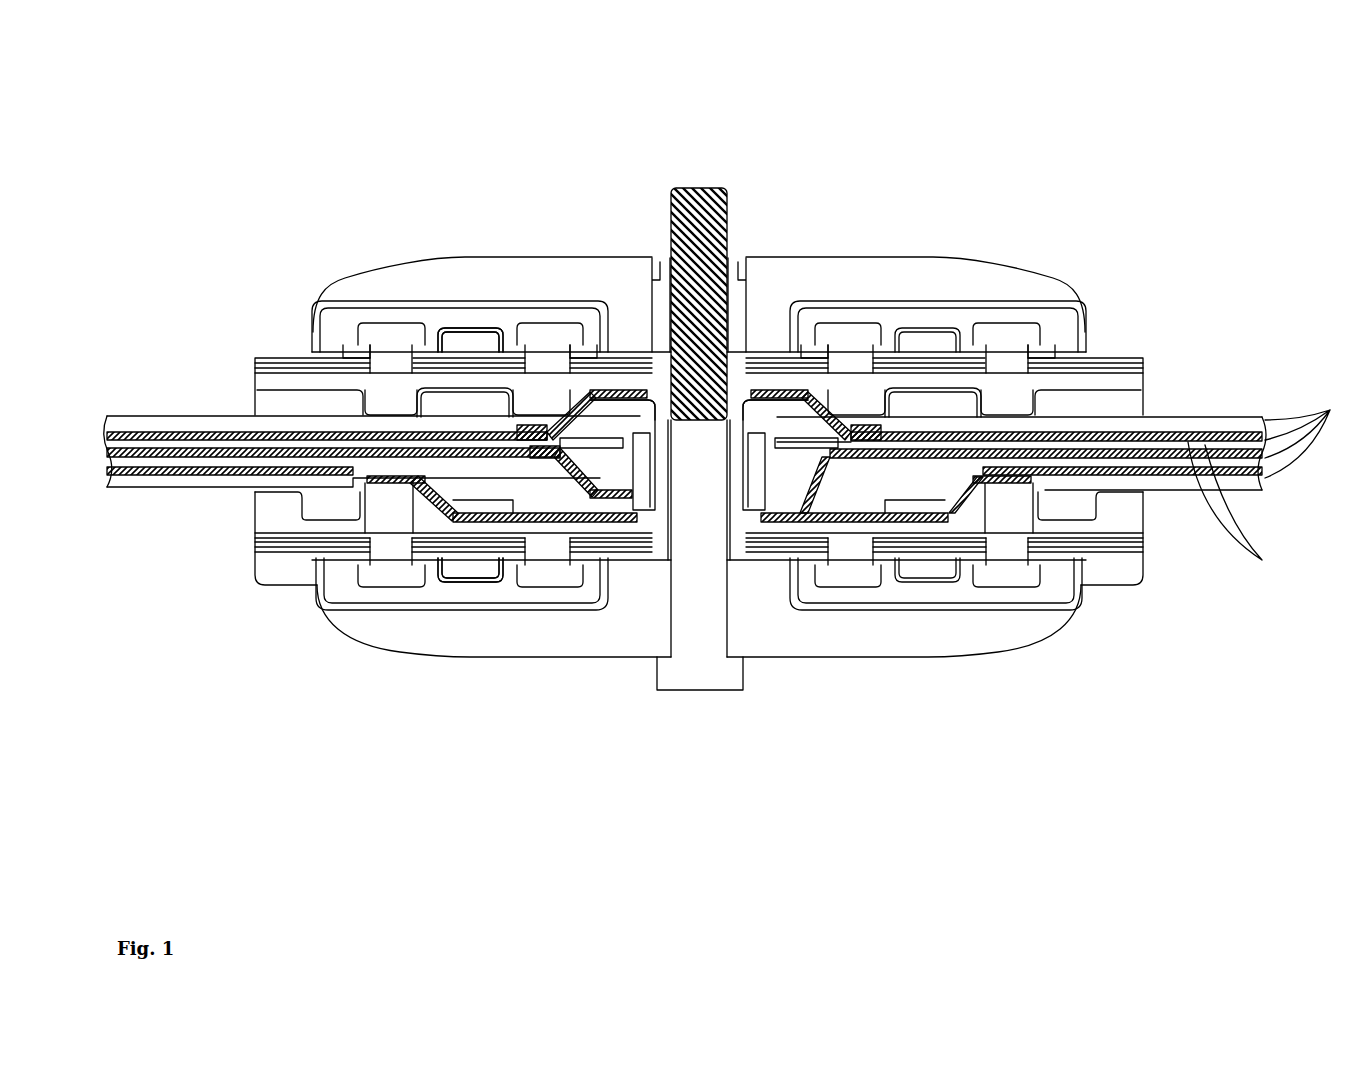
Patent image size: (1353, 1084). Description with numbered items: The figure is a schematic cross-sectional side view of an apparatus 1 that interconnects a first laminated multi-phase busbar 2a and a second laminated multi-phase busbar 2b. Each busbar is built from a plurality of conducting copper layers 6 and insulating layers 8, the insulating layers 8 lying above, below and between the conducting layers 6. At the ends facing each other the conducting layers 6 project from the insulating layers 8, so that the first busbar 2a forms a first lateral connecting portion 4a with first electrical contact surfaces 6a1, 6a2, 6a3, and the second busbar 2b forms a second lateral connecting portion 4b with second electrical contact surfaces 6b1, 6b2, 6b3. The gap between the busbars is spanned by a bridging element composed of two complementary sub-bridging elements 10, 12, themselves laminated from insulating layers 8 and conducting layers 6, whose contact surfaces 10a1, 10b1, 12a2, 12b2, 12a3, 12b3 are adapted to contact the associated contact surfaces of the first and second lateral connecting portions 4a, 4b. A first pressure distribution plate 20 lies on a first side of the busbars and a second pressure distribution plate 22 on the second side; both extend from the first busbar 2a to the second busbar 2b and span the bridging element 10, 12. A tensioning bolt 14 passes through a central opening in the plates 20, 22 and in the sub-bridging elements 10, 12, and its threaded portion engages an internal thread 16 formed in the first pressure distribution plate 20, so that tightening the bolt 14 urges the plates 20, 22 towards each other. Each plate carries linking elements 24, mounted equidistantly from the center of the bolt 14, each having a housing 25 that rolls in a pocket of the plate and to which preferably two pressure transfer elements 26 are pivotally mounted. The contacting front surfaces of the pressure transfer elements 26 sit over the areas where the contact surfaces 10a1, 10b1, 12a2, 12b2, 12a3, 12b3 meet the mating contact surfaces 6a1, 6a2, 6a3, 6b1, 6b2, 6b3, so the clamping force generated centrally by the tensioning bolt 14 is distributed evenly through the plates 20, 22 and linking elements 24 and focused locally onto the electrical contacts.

The apparatus 1 is at (1151, 626).
The first laminated multi-phase busbar 2a is at (1214, 421).
The second laminated multi-phase busbar 2b is at (136, 416).
The first lateral connecting portion 4a is at (1008, 320).
The second lateral connecting portion 4b is at (432, 322).
The conducting copper layers 6 is at (1235, 508).
The first electrical contact surface 6a1 is at (857, 430).
The first electrical contact surface 6a2 is at (880, 522).
The first electrical contact surface 6a3 is at (1000, 490).
The second electrical contact surface 6b1 is at (545, 417).
The second electrical contact surface 6b2 is at (525, 518).
The second electrical contact surface 6b3 is at (447, 600).
The insulating layers 8 is at (1305, 432).
The sub-bridging element 10 is at (388, 395).
The contact surface of bridging element 10a1 is at (790, 380).
The contact surface of bridging element 10b1 is at (622, 393).
The sub-bridging element 12 is at (320, 527).
The contact surface of bridging element 12a2 is at (838, 467).
The contact surface of bridging element 12a3 is at (1027, 485).
The contact surface of bridging element 12b2 is at (548, 470).
The contact surface of bridging element 12b3 is at (415, 475).
The tensioning bolt 14 is at (703, 677).
The internal thread 16 is at (660, 280).
The first pressure distribution plate 20 is at (580, 277).
The second pressure distribution plate 22 is at (612, 627).
The linking element 24 is at (393, 345).
The housing 25 is at (373, 317).
The pressure transfer element 26 is at (390, 322).